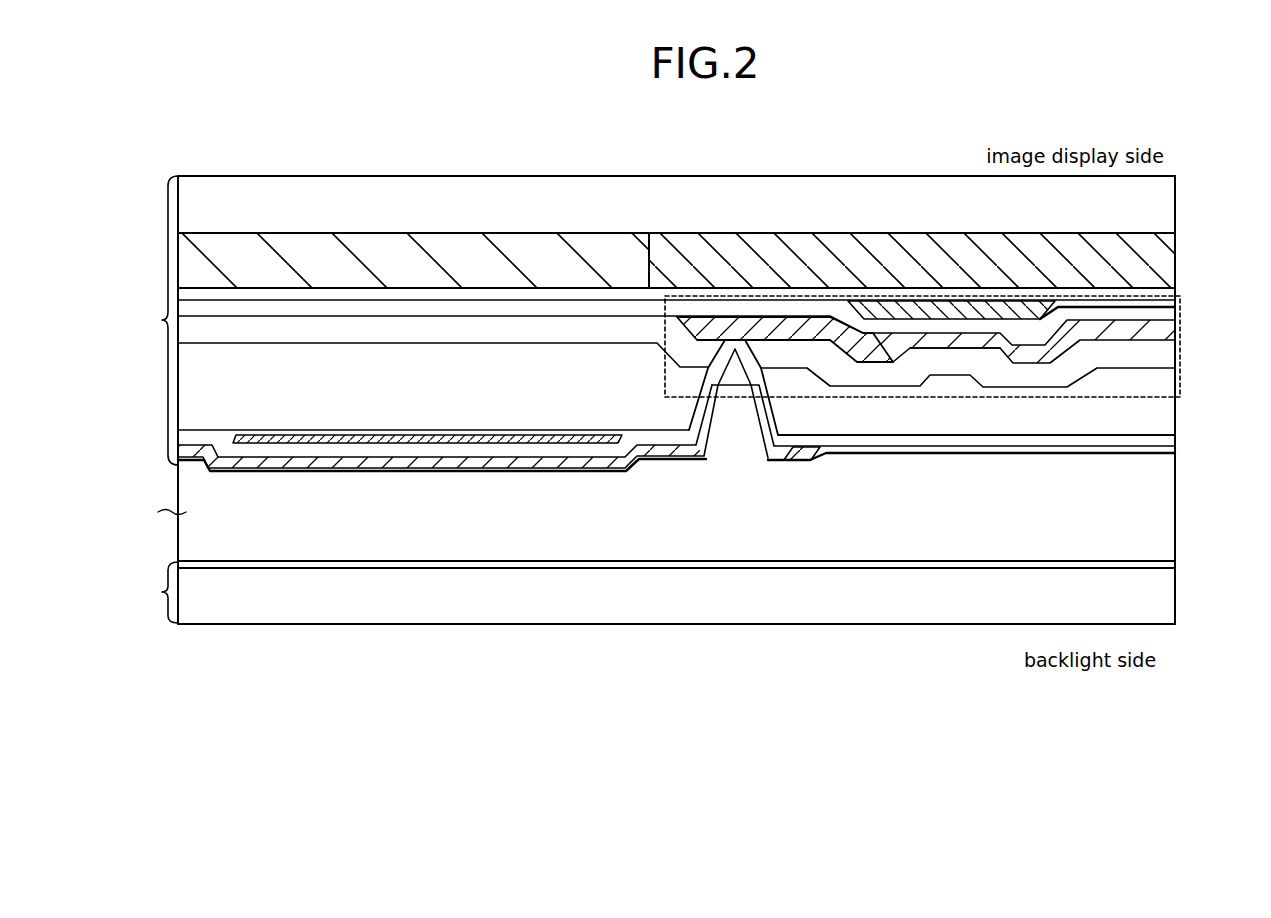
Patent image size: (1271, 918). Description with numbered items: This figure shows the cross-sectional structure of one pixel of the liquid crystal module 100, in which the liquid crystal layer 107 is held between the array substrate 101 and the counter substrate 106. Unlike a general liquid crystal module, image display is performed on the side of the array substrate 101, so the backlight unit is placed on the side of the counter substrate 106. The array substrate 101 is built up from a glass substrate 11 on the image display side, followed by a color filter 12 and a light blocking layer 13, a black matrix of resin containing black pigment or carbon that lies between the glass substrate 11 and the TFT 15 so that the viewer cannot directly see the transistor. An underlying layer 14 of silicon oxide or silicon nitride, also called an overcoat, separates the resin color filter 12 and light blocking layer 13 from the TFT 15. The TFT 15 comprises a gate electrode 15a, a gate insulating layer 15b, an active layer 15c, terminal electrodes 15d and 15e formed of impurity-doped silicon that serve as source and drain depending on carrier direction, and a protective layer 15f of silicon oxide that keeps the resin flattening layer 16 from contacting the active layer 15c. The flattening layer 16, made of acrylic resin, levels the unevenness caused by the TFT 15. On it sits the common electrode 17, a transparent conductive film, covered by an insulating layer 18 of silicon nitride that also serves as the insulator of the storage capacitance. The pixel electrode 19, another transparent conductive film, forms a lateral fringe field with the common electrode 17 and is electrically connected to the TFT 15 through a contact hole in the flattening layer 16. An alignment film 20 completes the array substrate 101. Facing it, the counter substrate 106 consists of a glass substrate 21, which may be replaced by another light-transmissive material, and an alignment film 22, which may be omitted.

The liquid crystal module 100 is at (898, 156).
The array substrate 101 is at (148, 320).
The counter substrate 106 is at (148, 592).
The liquid crystal layer 107 is at (152, 512).
The glass substrate 11 is at (1174, 202).
The color filter 12 is at (470, 239).
The light blocking layer 13 is at (965, 239).
The underlying layer 14 is at (600, 298).
The TFT 15 is at (1068, 398).
The gate electrode 15a is at (1012, 298).
The gate insulating layer 15b is at (1167, 310).
The active layer 15c is at (953, 343).
The terminal electrode 15d is at (697, 340).
The terminal electrode 15e is at (1167, 331).
The protective layer 15f is at (1167, 360).
The flattening layer 16 is at (1168, 432).
The common electrode 17 is at (282, 430).
The insulating layer 18 is at (332, 443).
The pixel electrode 19 is at (266, 472).
The alignment film 20 is at (324, 475).
The glass substrate 21 is at (1172, 599).
The alignment film 22 is at (372, 560).